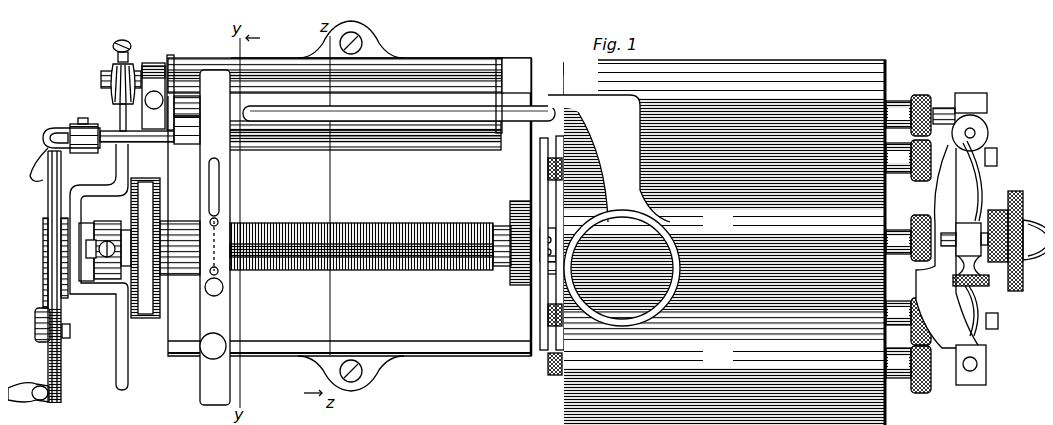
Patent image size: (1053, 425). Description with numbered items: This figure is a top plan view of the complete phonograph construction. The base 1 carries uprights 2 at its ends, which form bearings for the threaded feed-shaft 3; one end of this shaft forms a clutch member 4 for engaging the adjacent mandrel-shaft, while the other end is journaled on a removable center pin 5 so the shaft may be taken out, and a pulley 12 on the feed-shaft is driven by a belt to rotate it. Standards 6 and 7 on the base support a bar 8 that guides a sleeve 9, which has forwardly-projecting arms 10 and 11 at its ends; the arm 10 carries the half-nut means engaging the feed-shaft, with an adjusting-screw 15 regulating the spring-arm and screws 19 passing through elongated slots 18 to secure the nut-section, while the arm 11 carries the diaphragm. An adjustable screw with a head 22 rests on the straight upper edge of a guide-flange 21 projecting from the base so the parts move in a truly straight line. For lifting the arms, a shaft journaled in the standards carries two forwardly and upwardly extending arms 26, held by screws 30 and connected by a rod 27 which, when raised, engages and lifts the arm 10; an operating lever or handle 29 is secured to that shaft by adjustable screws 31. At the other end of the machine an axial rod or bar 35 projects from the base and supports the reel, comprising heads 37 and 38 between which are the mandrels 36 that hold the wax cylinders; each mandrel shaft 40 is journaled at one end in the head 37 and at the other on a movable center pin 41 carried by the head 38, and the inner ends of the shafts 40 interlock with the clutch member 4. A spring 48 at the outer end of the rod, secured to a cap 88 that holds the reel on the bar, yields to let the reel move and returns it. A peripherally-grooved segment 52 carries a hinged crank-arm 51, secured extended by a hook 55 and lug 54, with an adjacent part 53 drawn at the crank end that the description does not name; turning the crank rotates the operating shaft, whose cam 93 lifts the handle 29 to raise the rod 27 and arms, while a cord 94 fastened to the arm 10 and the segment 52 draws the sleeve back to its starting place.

The base 1 is at (468, 320).
The uprights 2 is at (98, 276).
The threaded feed-shaft 3 is at (333, 258).
The clutch member 4 is at (532, 228).
The removable center pin 5 is at (78, 244).
The standard 6 is at (143, 58).
The standard 7 is at (508, 60).
The bar 8 is at (693, 80).
The sleeve 9 is at (352, 106).
The arm 10 is at (221, 163).
The arm 11 is at (614, 210).
The pulley 12 is at (138, 306).
The adjusting-screw 15 is at (216, 280).
The elongated slots 18 is at (246, 235).
The screws 19 is at (212, 213).
The guide-flange 21 is at (280, 342).
The head 22 is at (200, 345).
The arms 26 is at (166, 130).
The rod 27 is at (265, 56).
The operating lever or handle 29 is at (108, 160).
The screws 30 is at (172, 90).
The adjustable screws 31 is at (105, 40).
The axial rod or bar 35 is at (1030, 228).
The mandrels 36 is at (660, 62).
The reel-head 37 is at (530, 184).
The reel-head 38 is at (922, 186).
The shaft 40 is at (890, 98).
The removable or movable center pin 41 is at (978, 102).
The spring 48 is at (962, 210).
The crank-arm 51 is at (40, 392).
The peripherally-grooved segment 52 is at (40, 184).
The bracket 53 is at (34, 318).
The lug 54 is at (62, 326).
The hook 55 is at (58, 334).
The cap 88 is at (1014, 186).
The cam 93 is at (72, 232).
The cord 94 is at (60, 120).